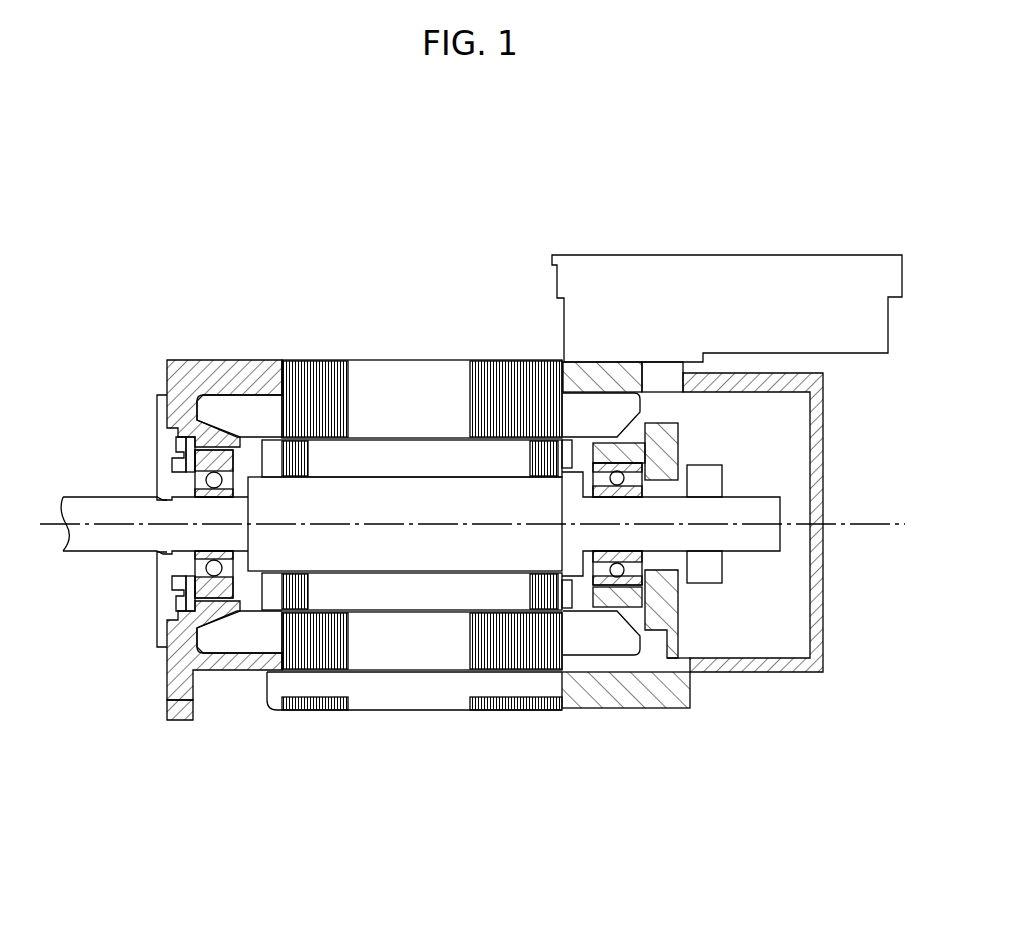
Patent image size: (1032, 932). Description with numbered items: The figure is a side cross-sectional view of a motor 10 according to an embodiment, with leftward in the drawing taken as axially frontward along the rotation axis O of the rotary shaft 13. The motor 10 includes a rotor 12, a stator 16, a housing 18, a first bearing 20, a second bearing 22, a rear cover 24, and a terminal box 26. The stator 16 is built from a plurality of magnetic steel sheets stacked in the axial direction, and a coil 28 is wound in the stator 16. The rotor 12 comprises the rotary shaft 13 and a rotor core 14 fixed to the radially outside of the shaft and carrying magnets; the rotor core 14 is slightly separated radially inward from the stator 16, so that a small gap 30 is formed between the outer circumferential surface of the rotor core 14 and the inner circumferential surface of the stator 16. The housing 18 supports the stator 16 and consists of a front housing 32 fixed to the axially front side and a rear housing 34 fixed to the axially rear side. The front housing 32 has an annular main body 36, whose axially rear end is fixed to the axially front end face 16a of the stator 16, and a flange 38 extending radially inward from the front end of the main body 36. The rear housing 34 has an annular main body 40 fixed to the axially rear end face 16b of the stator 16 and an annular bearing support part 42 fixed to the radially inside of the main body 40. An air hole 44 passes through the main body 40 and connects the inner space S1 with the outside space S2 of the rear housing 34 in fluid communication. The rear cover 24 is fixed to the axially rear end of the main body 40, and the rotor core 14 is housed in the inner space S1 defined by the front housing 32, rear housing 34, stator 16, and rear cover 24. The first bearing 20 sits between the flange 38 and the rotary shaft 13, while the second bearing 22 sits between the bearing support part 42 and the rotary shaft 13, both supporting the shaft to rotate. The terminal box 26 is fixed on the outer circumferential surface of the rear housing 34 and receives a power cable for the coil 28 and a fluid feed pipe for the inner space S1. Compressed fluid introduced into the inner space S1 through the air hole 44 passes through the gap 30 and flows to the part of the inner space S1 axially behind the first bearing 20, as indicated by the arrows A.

The motor 10 is at (780, 132).
The rotor 12 is at (345, 618).
The rotary shaft 13 is at (110, 497).
The rotor core 14 is at (382, 597).
The stator 16 is at (439, 475).
The axially front end face 16a is at (283, 360).
The axially rear end face 16b is at (595, 407).
The housing 18 is at (233, 316).
The first bearing 20 is at (193, 672).
The second bearing 22 is at (610, 594).
The rear cover 24 is at (798, 672).
The terminal box 26 is at (767, 255).
The coil 28 is at (575, 393).
The gap 30 is at (386, 440).
The front housing 32 is at (167, 429).
The rear housing 34 is at (639, 697).
The annular main body 36 is at (183, 417).
The flange 38 is at (187, 418).
The annular main body 40 is at (655, 700).
The bearing support part 42 is at (673, 603).
The air hole 44 is at (657, 362).
The arrows A is at (416, 437).
The inner space S1 is at (757, 444).
The outside space S2 is at (63, 389).
The rotation axis O is at (853, 527).